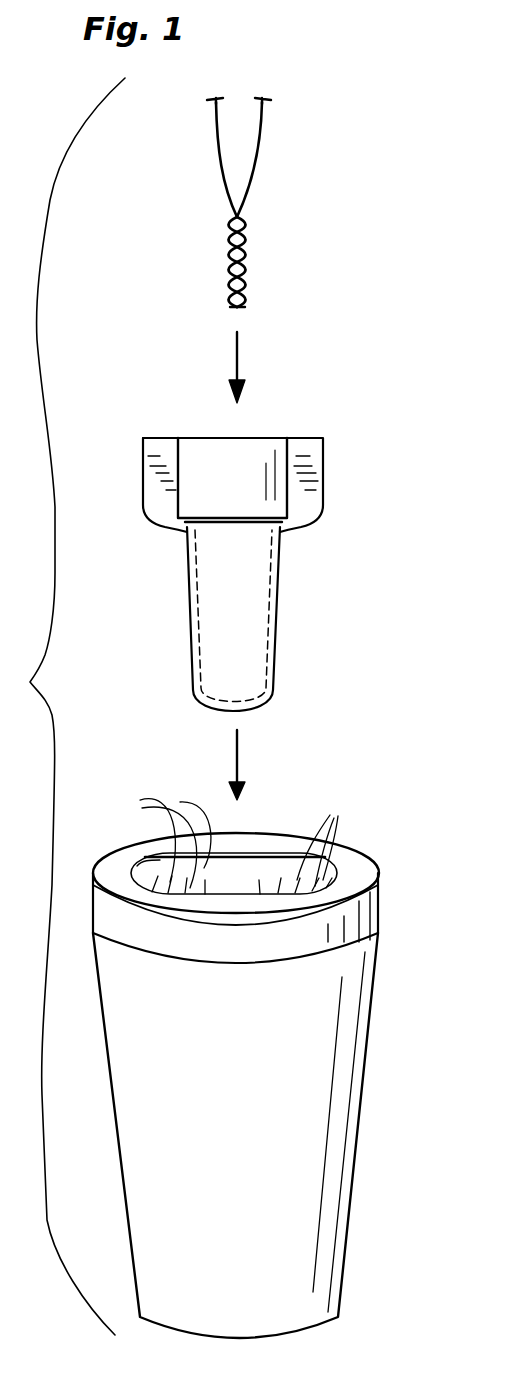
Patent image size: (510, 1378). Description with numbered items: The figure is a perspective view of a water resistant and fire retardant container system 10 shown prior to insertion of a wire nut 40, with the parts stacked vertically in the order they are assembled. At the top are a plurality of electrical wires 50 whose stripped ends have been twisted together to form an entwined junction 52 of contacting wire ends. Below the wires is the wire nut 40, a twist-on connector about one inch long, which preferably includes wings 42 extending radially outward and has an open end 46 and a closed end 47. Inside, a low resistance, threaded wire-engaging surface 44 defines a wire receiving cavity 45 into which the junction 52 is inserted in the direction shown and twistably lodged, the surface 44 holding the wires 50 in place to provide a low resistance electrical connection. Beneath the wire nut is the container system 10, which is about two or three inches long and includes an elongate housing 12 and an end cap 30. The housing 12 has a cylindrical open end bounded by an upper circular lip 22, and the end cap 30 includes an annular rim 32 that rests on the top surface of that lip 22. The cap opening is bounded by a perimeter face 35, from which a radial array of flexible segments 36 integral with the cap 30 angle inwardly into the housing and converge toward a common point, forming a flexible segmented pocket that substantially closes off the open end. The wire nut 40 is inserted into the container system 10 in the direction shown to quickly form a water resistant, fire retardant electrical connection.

The container system 10 is at (278, 1035).
The elongate housing 12 is at (303, 1131).
The upper circular lip 22 is at (365, 913).
The end cap 30 is at (352, 872).
The annular rim 32 is at (368, 894).
The perimeter face 35 is at (226, 865).
The flexible segments 36 is at (239, 841).
The wire nut 40 is at (228, 540).
The wings 42 is at (157, 504).
The wire-engaging surface 44 is at (270, 598).
The wire receiving cavity 45 is at (265, 424).
The open end 46 is at (295, 437).
The closed end 47 is at (248, 711).
The electrical wires 50 is at (260, 140).
The entwined junction 52 is at (246, 255).